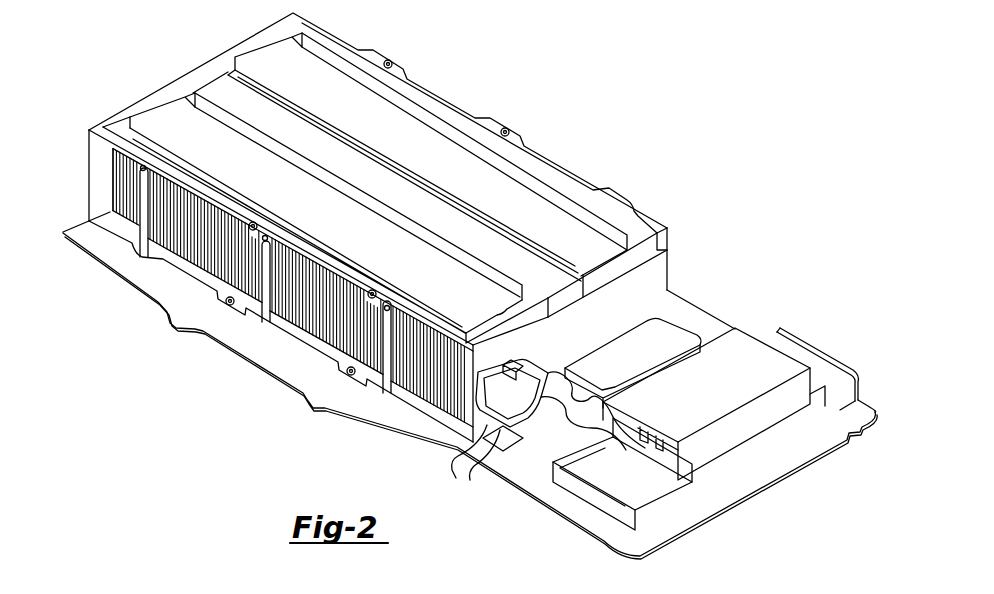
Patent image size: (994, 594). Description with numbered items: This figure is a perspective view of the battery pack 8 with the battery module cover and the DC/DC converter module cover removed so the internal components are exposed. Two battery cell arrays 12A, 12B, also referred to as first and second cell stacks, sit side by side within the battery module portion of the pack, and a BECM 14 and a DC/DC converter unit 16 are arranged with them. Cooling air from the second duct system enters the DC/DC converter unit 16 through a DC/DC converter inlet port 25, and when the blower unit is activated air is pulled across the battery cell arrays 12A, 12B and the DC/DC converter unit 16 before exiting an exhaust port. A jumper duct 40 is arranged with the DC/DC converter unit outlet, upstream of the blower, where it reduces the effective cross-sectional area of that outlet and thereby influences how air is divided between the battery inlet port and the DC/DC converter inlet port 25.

The battery pack 8 is at (543, 86).
The battery cell array 12A is at (165, 113).
The battery cell array 12B is at (421, 143).
The BECM 14 is at (688, 312).
The DC/DC converter unit 16 is at (742, 356).
The DC/DC converter inlet port 25 is at (585, 488).
The jumper duct 40 is at (812, 348).